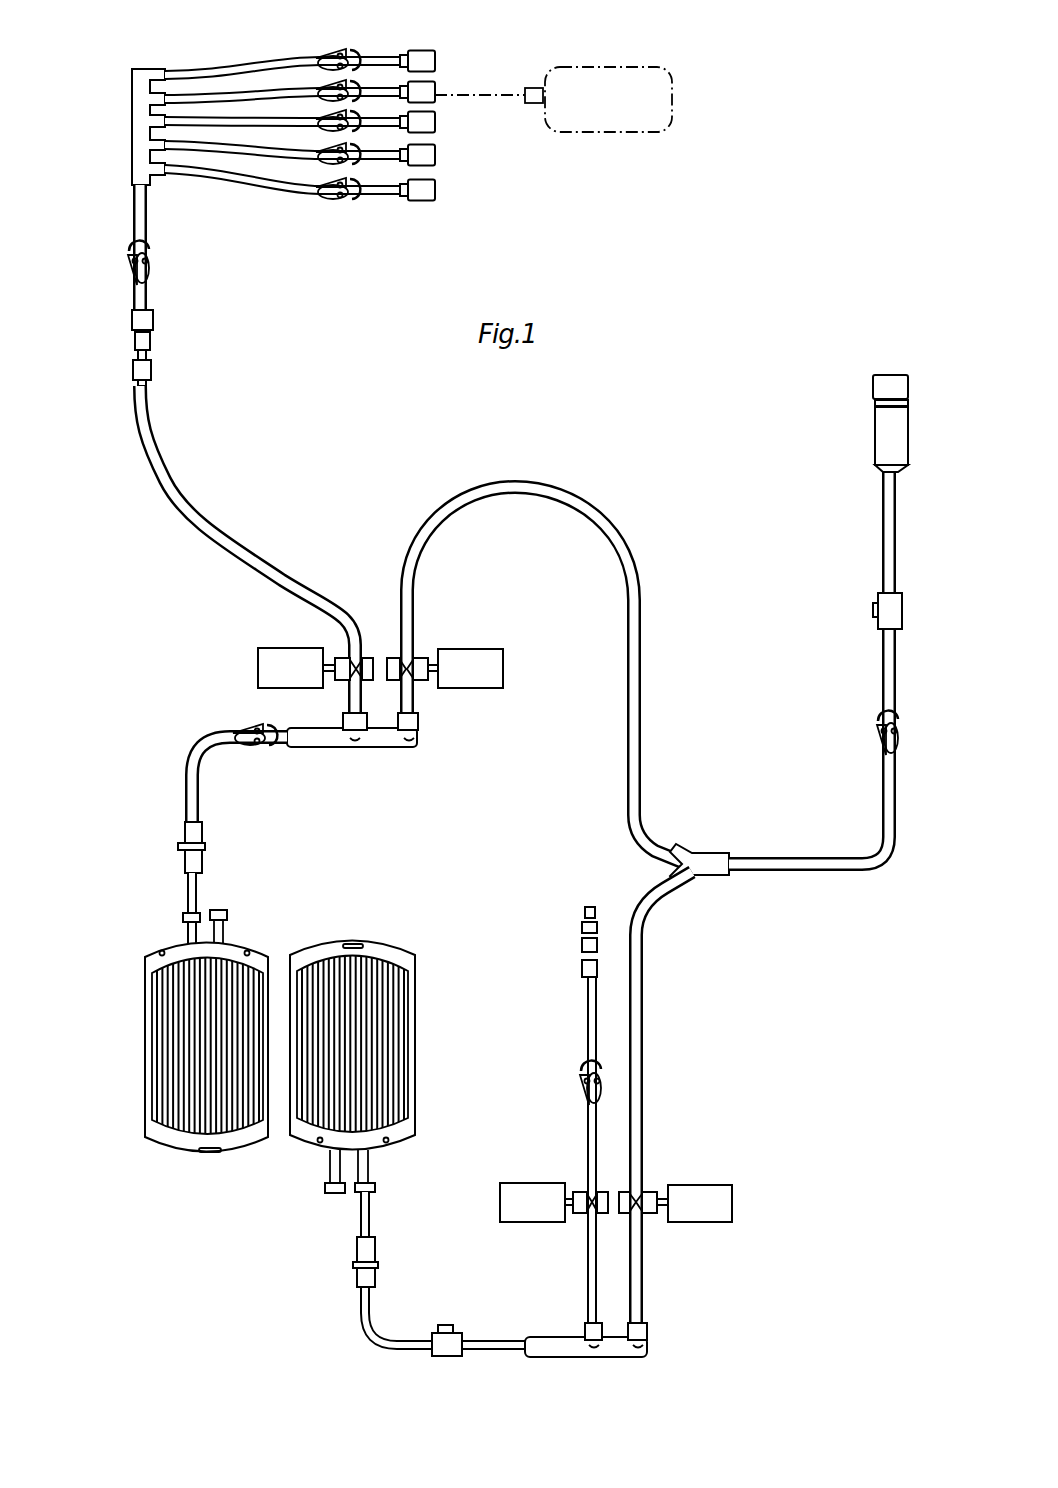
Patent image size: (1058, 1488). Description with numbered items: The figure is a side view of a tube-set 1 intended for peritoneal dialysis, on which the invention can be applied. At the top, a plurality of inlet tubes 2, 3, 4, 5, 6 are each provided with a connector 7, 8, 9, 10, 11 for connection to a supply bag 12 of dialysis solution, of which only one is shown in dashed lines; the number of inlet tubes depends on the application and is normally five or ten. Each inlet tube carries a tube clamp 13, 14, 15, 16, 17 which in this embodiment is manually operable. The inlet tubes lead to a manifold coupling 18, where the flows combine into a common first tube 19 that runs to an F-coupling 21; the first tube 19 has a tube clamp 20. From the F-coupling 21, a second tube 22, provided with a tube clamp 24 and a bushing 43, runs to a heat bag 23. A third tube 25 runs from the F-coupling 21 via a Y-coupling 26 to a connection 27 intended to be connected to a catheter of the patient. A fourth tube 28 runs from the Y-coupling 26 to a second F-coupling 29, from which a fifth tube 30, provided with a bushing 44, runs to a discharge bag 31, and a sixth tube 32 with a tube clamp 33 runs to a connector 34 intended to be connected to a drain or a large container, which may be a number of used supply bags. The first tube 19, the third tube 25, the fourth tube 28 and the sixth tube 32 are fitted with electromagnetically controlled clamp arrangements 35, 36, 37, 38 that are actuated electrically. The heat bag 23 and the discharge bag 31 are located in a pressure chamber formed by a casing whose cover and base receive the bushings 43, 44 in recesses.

The tube-set 1 is at (350, 455).
The inlet tube 2 is at (180, 71).
The inlet tube 3 is at (208, 94).
The inlet tube 4 is at (195, 126).
The inlet tube 5 is at (223, 151).
The inlet tube 6 is at (243, 183).
The connector 7 is at (421, 52).
The connector 8 is at (430, 92).
The connector 9 is at (435, 124).
The connector 10 is at (435, 156).
The connector 11 is at (435, 189).
The supply bag 12 is at (672, 103).
The tube clamp 13 is at (316, 58).
The tube clamp 14 is at (316, 89).
The tube clamp 15 is at (316, 124).
The tube clamp 16 is at (316, 157).
The tube clamp 17 is at (338, 201).
The manifold coupling 18 is at (132, 133).
The first tube 19 is at (196, 506).
The tube clamp 20 is at (150, 270).
The F-coupling 21 is at (350, 748).
The second tube 22 is at (187, 770).
The heat bag 23 is at (248, 950).
The tube clamp 24 is at (258, 748).
The third tube 25 is at (440, 522).
The Y-coupling 26 is at (710, 853).
The connection 27 is at (876, 446).
The fourth tube 28 is at (642, 1020).
The second F-coupling 29 is at (650, 1327).
The fifth tube 30 is at (360, 1322).
The discharge bag 31 is at (405, 960).
The sixth tube 32 is at (587, 1143).
The tube clamp 33 is at (578, 1088).
The connector 34 is at (585, 912).
The electromagnetically controlled clamp arrangement 35 is at (258, 668).
The electromagnetically controlled clamp arrangement 36 is at (503, 668).
The electromagnetically controlled clamp arrangement 37 is at (500, 1203).
The electromagnetically controlled clamp arrangement 38 is at (732, 1205).
The bushing 43 is at (185, 838).
The bushing 44 is at (357, 1257).